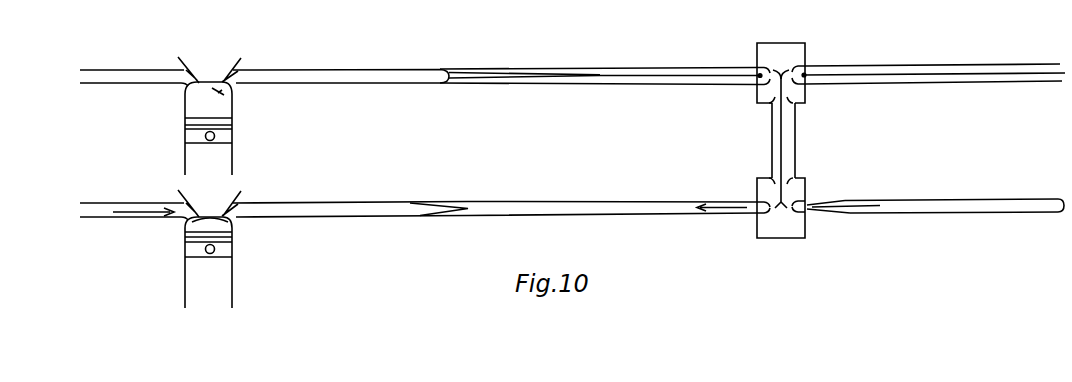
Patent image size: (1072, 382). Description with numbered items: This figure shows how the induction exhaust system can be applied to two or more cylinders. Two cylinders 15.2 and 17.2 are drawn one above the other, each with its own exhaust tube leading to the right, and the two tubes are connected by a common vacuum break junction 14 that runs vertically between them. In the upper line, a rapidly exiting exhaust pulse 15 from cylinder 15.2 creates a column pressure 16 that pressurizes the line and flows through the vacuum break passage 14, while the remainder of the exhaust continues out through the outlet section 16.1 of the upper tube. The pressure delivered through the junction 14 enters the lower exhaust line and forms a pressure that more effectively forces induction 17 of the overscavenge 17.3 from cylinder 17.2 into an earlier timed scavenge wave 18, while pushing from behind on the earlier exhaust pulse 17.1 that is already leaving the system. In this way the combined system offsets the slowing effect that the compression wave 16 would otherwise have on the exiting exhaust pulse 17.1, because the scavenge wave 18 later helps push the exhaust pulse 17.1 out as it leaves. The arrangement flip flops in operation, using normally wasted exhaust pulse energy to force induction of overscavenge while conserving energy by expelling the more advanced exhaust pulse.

The vacuum break junction 14 is at (795, 140).
The exhaust pulse 15 is at (398, 63).
The cylinder 15.2 is at (152, 132).
The column pressure 16 is at (603, 65).
The exhaust outlet section 16.1 is at (900, 62).
The induction 17 is at (622, 200).
The exhaust pulse 17.1 is at (930, 198).
The cylinder 17.2 is at (162, 258).
The overscavenge 17.3 is at (333, 198).
The scavenge wave 18 is at (812, 198).